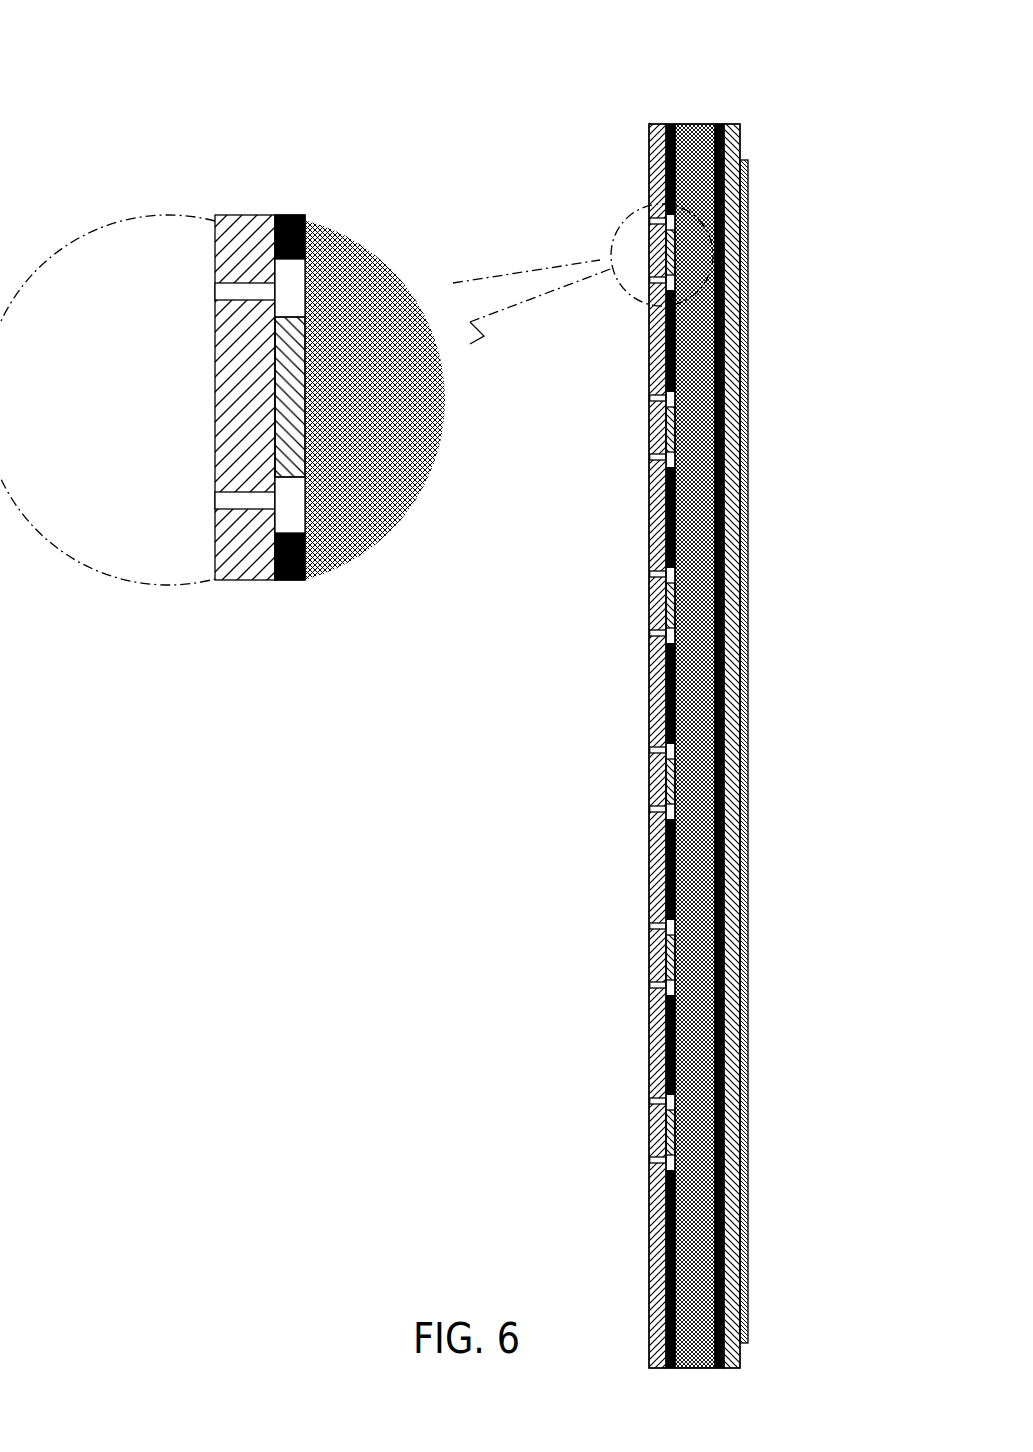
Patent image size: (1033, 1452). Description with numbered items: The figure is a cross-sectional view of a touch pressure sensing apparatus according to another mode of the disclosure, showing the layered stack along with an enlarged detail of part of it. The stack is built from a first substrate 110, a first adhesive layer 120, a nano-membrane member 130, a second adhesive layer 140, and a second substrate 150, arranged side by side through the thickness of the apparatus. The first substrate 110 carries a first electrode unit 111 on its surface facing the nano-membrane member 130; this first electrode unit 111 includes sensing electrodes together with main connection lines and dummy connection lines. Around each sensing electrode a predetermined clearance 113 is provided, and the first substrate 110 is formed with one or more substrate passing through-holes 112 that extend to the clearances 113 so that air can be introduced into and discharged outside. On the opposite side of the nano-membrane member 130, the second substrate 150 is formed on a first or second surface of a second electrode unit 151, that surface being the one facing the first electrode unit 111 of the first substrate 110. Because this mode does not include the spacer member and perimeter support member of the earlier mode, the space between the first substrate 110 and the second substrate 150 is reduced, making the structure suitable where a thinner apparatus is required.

The first substrate 110 is at (648, 130).
The first electrode unit 111 is at (313, 357).
The substrate passing through-hole 112 is at (213, 290).
The clearance 113 is at (291, 287).
The first adhesive layer 120 is at (658, 123).
The nano-membrane member 130 is at (698, 123).
The second adhesive layer 140 is at (714, 123).
The second substrate 150 is at (733, 123).
The second electrode unit 151 is at (749, 159).